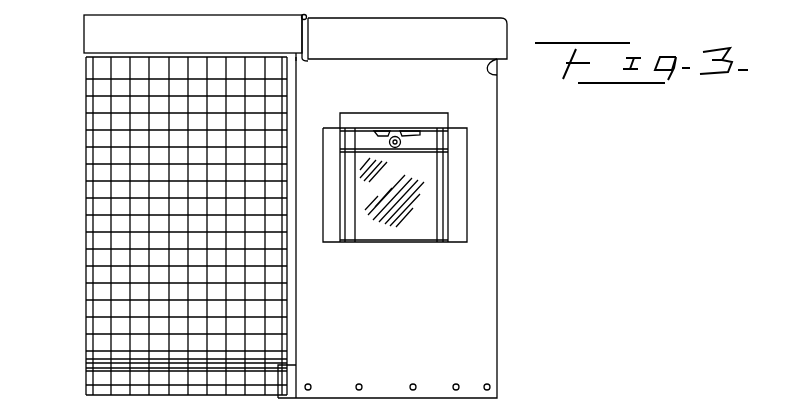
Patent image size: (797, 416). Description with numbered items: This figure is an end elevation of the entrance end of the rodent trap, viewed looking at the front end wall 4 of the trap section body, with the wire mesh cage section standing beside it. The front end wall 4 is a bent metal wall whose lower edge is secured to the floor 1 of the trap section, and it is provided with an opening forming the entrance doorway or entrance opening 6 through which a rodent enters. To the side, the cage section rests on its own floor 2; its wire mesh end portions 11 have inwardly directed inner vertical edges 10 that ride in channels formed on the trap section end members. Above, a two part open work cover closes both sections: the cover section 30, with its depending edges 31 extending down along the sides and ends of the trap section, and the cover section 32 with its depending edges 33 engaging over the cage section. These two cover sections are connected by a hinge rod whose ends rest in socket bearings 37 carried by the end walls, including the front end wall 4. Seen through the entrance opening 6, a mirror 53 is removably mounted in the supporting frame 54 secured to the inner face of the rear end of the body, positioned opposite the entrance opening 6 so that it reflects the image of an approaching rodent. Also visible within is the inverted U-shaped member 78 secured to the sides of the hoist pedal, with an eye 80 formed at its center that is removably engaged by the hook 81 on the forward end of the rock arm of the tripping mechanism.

The floor of the trap section 1 is at (411, 413).
The floor of the cage section 2 is at (99, 376).
The front end wall 4 is at (545, 131).
The entrance opening 6 is at (405, 250).
The inner vertical edges of the cage section end portions 10 is at (287, 297).
The end portions of the cage section 11 is at (145, 248).
The cover section for the trap section 30 is at (490, 22).
The depending edges of cover section 30 31 is at (500, 73).
The cover section for the cage section 32 is at (137, 16).
The depending edges of cover section 32 33 is at (118, 41).
The socket bearings 37 is at (308, 15).
The mirror 53 is at (420, 190).
The mirror supporting frame 54 is at (440, 205).
The U-shaped member 78 is at (425, 135).
The eye 80 is at (395, 134).
The hook 81 is at (365, 131).